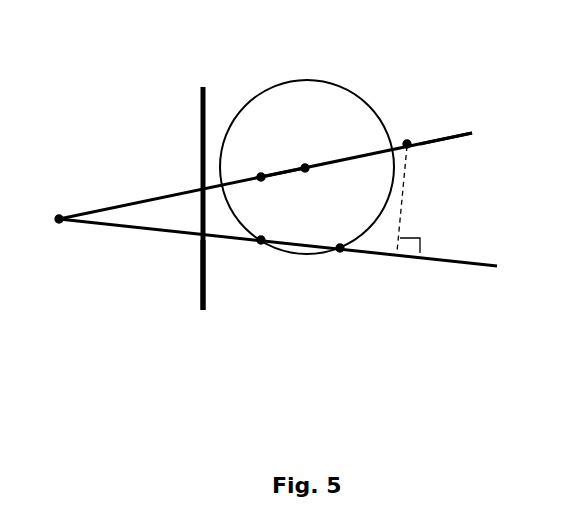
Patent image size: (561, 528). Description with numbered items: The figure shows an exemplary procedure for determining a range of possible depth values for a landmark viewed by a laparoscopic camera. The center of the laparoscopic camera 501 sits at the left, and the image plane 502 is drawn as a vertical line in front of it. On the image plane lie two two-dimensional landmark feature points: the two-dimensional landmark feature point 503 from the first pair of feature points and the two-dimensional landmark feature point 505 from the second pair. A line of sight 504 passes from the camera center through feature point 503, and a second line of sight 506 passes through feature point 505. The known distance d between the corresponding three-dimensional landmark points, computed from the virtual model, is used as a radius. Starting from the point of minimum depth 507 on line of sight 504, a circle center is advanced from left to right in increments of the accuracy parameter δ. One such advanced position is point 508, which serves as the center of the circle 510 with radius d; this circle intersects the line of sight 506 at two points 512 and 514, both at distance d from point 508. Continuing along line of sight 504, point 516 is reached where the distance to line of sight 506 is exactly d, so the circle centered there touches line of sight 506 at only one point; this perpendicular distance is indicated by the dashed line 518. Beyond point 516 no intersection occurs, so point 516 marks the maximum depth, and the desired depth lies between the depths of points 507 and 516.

The center of the laparoscopic camera 501 is at (58, 243).
The image plane 502 is at (185, 108).
The 2D landmark feature point from the first pair of feature points 503 is at (190, 177).
The line of sight 504 is at (467, 127).
The 2D landmark feature point from the second pair of feature points 505 is at (189, 250).
The line of sight 506 is at (462, 280).
The point of minimum depth 507 is at (267, 187).
The center point of circle 508 is at (305, 163).
The circle 510 is at (292, 77).
The intersection point 512 is at (267, 255).
The intersection point 514 is at (340, 253).
The point of maximum depth value 516 is at (415, 155).
The perpendicular dashed line 518 is at (405, 207).